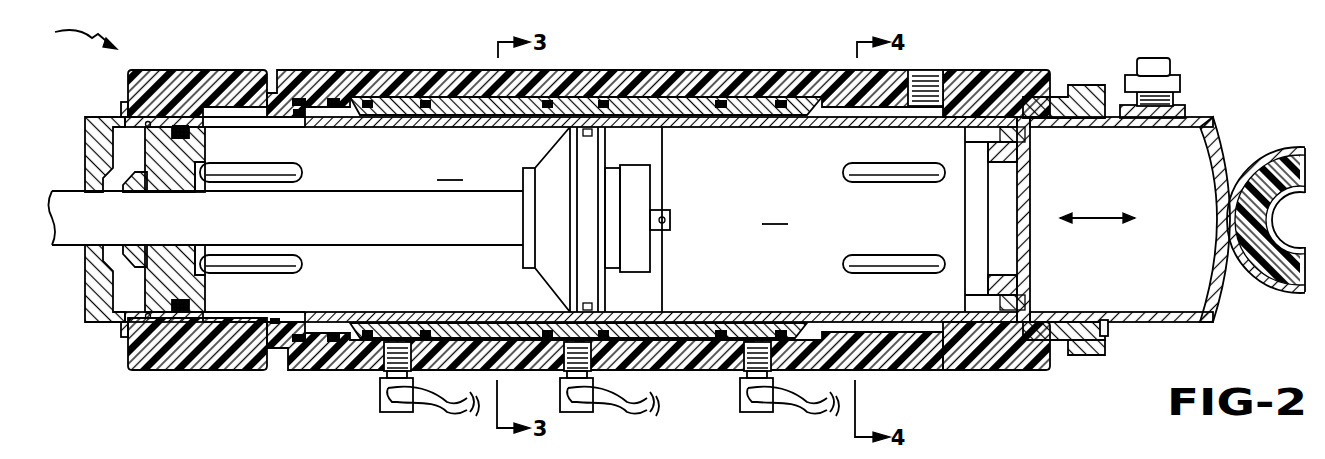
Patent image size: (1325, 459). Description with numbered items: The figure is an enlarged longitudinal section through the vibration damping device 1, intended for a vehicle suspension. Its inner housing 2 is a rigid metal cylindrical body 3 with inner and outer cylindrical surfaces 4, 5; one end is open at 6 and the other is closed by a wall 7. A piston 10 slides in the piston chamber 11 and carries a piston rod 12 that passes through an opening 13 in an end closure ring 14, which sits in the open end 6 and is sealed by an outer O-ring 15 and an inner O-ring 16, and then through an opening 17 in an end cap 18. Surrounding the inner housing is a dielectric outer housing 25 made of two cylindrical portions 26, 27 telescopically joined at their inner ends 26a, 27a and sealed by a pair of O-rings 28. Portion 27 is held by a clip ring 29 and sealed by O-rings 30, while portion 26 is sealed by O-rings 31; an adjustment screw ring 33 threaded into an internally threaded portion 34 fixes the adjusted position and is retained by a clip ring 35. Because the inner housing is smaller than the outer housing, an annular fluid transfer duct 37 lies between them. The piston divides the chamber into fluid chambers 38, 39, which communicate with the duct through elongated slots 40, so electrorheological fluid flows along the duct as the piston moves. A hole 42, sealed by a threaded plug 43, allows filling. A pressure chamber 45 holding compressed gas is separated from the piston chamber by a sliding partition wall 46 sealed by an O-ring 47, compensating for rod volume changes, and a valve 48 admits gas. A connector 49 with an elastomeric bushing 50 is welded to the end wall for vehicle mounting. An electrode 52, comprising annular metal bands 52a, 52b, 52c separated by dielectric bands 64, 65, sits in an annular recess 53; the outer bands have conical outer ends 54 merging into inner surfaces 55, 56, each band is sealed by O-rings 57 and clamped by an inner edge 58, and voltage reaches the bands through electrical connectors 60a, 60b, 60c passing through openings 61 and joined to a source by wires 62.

The vibration damping device 1 is at (76, 35).
The inner housing 2 is at (1178, 322).
The cylindrical body 3 is at (783, 318).
The inner cylindrical surface 4 is at (767, 128).
The outer cylindrical surface 5 is at (748, 113).
The open end 6 is at (133, 134).
The end closure wall 7 is at (1215, 135).
The piston 10 is at (587, 233).
The piston chamber 11 is at (703, 153).
The piston rod 12 is at (385, 232).
The opening 13 is at (185, 190).
The end closure ring 14 is at (178, 257).
The outer O-ring 15 is at (190, 305).
The inner O-ring 16 is at (153, 250).
The opening 17 is at (95, 238).
The end cap 18 is at (88, 166).
The outer housing 25 is at (955, 378).
The cylindrical portion 26 is at (895, 371).
The inner end 26a is at (283, 372).
The cylindrical portion 27 is at (197, 371).
The inner end 27a is at (328, 330).
The O-rings 28 is at (293, 350).
The clip ring 29 is at (122, 333).
The O-rings 30 is at (148, 324).
The O-rings 31 is at (1010, 312).
The adjustment screw ring 33 is at (1088, 357).
The internally threaded portion 34 is at (1042, 360).
The clip ring 35 is at (1108, 332).
The annular fluid transfer duct 37 is at (258, 328).
The fluid chamber 38 is at (449, 168).
The fluid chamber 39 is at (825, 219).
The elongated slots 40 is at (273, 170).
The hole 42 is at (940, 80).
The threaded plug 43 is at (922, 78).
The pressure chamber 45 is at (1152, 257).
The partition wall 46 is at (1031, 172).
The O-ring 47 is at (1008, 126).
The valve 48 is at (1178, 85).
The connector 49 is at (1281, 150).
The elastomeric bushing 50 is at (1270, 180).
The electrode 52 is at (383, 92).
The electrode band 52a is at (403, 328).
The electrode band 52b is at (562, 316).
The electrode band 52c is at (750, 328).
The annular recess 53 is at (578, 103).
The conical outer ends 54 is at (360, 105).
The inner surface 55 is at (826, 112).
The inner surface 56 is at (317, 108).
The O-rings 57 is at (425, 103).
The inner edge 58 is at (340, 347).
The electrical connector 60a is at (400, 413).
The electrical connector 60b is at (588, 413).
The electrical connector 60c is at (757, 413).
The openings 61 is at (388, 352).
The wires 62 is at (458, 406).
The dielectric band 64 is at (465, 328).
The dielectric band 65 is at (670, 340).